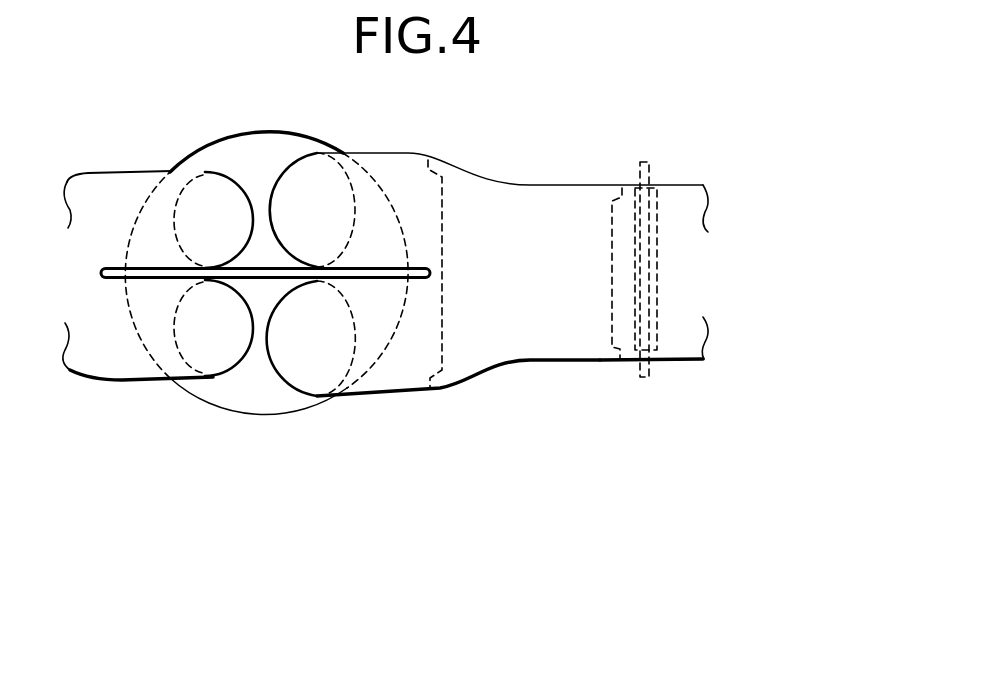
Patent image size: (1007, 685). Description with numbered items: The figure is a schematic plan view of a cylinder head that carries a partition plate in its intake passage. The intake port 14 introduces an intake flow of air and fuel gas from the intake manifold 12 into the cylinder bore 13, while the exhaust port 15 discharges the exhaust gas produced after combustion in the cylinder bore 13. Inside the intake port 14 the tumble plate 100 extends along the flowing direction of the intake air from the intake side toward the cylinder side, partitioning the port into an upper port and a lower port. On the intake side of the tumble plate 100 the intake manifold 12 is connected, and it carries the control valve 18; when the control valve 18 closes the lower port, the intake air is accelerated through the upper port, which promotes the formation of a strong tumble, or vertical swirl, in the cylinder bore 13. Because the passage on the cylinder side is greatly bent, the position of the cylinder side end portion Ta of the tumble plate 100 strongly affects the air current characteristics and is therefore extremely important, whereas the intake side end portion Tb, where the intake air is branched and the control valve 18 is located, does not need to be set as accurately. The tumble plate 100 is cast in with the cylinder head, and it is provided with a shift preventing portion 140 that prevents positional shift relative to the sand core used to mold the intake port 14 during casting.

The exhaust port 15 is at (111, 388).
The cylinder bore 13 is at (245, 423).
The tumble plate 100 is at (532, 203).
The intake port 14 is at (594, 378).
The intake manifold 12 is at (693, 375).
The shift preventing portion 140 is at (441, 395).
The control valve 18 is at (663, 208).
The cylinder side end portion Ta is at (447, 212).
The intake side end portion Tb is at (608, 214).